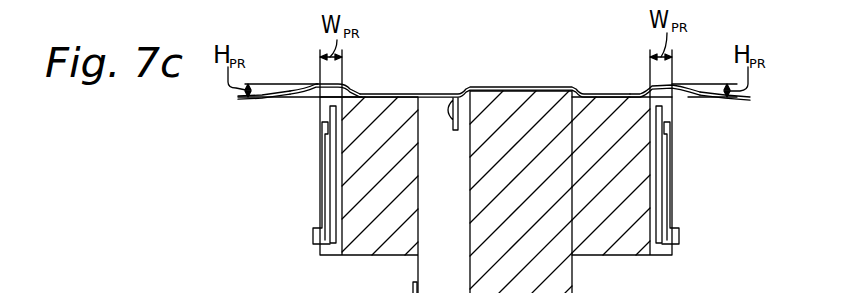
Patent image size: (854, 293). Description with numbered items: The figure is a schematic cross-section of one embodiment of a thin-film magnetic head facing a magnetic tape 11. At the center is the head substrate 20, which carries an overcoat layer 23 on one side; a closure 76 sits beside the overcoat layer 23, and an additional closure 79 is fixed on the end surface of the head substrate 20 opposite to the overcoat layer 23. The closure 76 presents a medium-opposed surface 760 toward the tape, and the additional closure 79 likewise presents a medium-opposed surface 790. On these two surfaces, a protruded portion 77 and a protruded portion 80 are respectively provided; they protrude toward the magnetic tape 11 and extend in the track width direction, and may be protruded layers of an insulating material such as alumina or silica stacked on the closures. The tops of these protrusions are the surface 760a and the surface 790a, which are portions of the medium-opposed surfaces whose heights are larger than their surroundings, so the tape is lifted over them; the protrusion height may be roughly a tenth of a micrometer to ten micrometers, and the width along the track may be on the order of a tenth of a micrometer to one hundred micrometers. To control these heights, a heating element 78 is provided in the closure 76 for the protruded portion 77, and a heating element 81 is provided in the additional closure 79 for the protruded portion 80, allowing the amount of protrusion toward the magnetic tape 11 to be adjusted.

The magnetic tape 11 is at (683, 85).
The head substrate 20 is at (515, 106).
The overcoat layer 23 is at (431, 118).
The closure 76 is at (398, 108).
The medium-opposed surface 760 is at (366, 71).
The surface of protruded portion 760a is at (305, 99).
The protruded portion 77 is at (326, 113).
The heating element 78 is at (322, 124).
The additional closure 79 is at (597, 118).
The medium-opposed surface 790 is at (612, 97).
The surface of protruded portion 790a is at (675, 100).
The protruded portion 80 is at (666, 116).
The heating element 81 is at (668, 123).